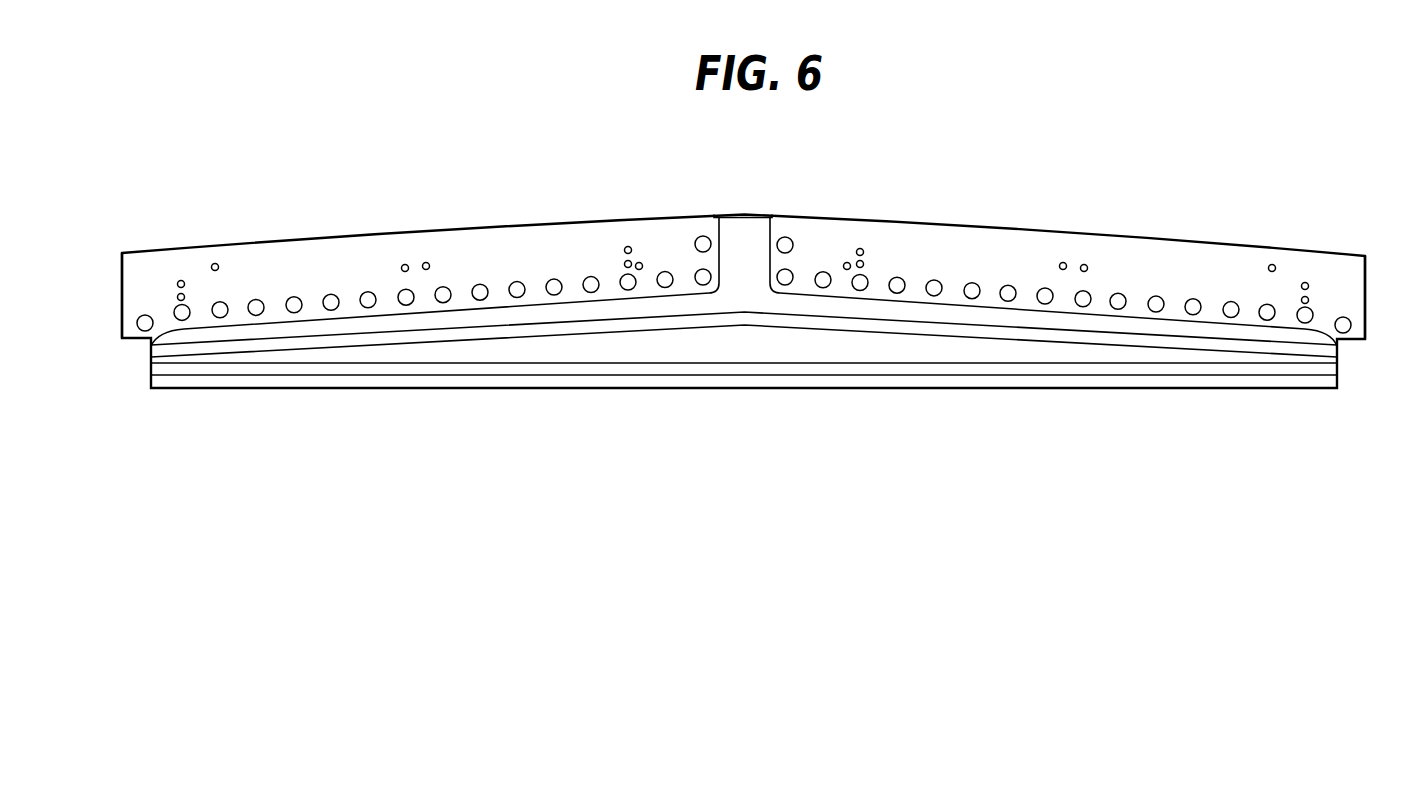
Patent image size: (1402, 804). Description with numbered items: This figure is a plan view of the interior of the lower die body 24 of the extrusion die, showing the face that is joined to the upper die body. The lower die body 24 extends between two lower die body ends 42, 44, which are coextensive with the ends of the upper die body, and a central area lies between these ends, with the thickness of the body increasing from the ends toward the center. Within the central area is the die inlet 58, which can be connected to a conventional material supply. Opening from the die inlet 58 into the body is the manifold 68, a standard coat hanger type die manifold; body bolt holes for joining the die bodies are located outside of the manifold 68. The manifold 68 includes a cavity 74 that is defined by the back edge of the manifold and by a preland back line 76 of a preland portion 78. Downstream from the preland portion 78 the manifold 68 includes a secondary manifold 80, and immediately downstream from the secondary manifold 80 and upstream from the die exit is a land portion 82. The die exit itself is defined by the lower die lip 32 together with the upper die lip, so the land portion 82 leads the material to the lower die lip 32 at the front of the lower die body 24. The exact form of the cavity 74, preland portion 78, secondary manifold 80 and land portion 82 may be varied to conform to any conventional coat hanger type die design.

The lower die body 24 is at (480, 247).
The lower die body end 44 is at (121, 276).
The lower die body end 42 is at (1366, 276).
The die inlet 58 is at (740, 212).
The manifold 68 is at (753, 285).
The cavity 74 is at (827, 303).
The preland back line 76 is at (895, 310).
The preland portion 78 is at (975, 350).
The secondary manifold 80 is at (1069, 375).
The land portion 82 is at (1157, 378).
The lower die lip 32 is at (1274, 390).